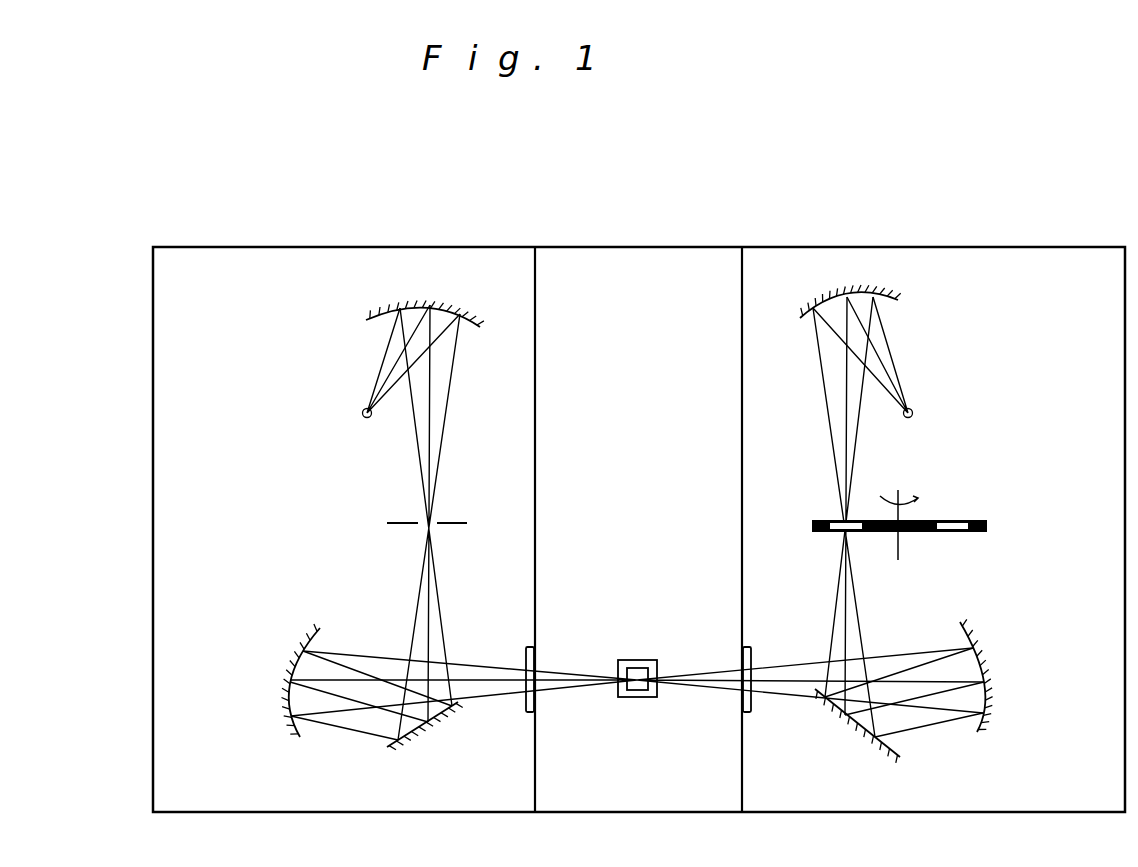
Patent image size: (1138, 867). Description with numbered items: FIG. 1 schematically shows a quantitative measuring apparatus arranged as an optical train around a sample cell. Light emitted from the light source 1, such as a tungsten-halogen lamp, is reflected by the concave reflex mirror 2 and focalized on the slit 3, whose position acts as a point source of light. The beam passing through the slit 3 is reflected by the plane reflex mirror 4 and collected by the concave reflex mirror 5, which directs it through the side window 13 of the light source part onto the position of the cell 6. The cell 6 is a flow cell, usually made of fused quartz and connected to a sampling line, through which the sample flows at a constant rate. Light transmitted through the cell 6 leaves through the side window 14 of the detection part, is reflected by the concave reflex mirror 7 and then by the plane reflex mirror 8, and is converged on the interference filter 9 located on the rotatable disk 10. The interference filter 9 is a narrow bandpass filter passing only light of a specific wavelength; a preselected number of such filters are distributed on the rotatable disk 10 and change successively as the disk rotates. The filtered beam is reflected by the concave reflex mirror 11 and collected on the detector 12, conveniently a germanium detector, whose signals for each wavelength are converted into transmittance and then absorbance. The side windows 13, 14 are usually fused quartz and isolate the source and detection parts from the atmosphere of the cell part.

The light source 1 is at (364, 420).
The concave reflex mirror 2 is at (466, 304).
The slit 3 is at (446, 520).
The plane reflex mirror 4 is at (413, 747).
The concave reflex mirror 5 is at (287, 710).
The cell 6 is at (637, 660).
The concave reflex mirror 7 is at (987, 658).
The plane reflex mirror 8 is at (862, 732).
The interference filter 9 is at (855, 518).
The rotatable disk 10 is at (988, 522).
The concave reflex mirror 11 is at (887, 291).
The detector 12 is at (913, 414).
The side window 13 is at (537, 656).
The side window 14 is at (742, 698).